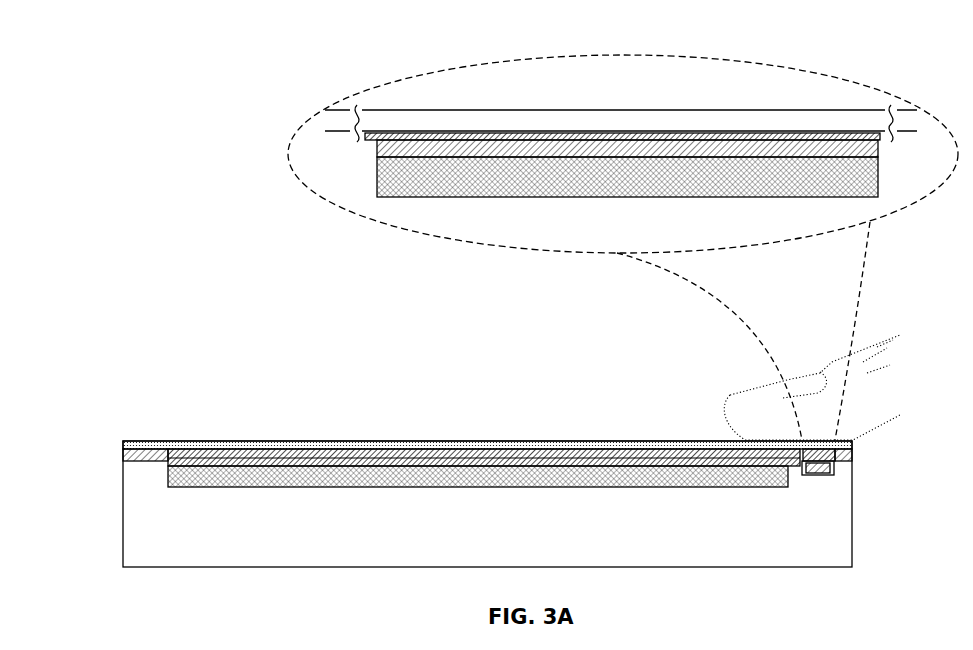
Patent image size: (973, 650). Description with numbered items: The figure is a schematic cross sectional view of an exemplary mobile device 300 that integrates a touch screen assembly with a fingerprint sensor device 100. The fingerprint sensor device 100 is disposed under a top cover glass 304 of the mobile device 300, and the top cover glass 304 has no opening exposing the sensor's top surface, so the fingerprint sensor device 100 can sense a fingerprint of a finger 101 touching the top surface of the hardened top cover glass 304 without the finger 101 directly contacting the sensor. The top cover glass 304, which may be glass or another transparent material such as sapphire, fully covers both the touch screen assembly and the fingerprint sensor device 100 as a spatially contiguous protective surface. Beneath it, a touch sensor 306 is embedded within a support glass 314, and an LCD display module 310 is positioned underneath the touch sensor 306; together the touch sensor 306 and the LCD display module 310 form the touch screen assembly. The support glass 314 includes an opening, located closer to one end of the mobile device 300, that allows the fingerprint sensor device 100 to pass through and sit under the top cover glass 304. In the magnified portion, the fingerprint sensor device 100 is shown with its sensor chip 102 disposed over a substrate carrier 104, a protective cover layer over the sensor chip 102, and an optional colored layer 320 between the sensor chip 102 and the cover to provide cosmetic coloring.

The fingerprint sensor device 100 is at (446, 73).
The finger 101 is at (787, 395).
The sensor chip 102 is at (392, 148).
The substrate carrier 104 is at (638, 178).
The mobile device 300 is at (288, 318).
The top cover glass 304 is at (548, 123).
The touch sensor 306 is at (527, 453).
The LCD display module 310 is at (423, 473).
The support glass 314 is at (152, 462).
The colored layer 320 is at (880, 140).